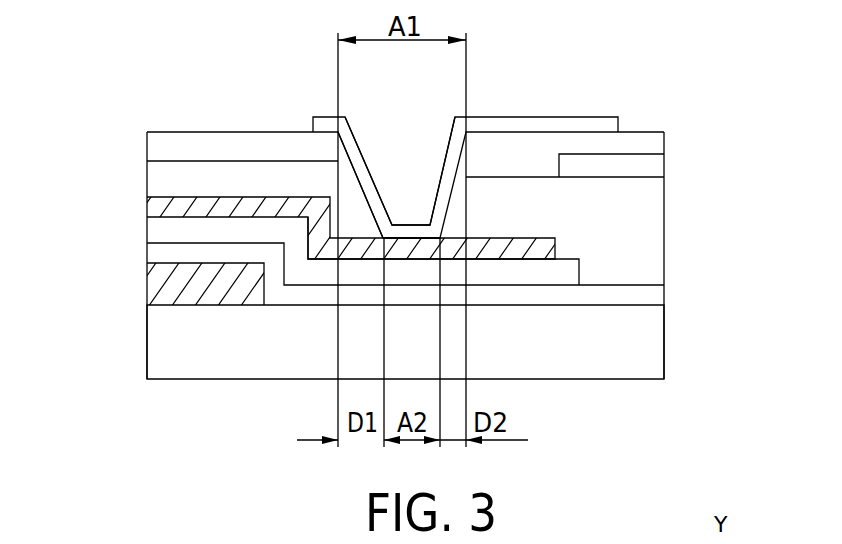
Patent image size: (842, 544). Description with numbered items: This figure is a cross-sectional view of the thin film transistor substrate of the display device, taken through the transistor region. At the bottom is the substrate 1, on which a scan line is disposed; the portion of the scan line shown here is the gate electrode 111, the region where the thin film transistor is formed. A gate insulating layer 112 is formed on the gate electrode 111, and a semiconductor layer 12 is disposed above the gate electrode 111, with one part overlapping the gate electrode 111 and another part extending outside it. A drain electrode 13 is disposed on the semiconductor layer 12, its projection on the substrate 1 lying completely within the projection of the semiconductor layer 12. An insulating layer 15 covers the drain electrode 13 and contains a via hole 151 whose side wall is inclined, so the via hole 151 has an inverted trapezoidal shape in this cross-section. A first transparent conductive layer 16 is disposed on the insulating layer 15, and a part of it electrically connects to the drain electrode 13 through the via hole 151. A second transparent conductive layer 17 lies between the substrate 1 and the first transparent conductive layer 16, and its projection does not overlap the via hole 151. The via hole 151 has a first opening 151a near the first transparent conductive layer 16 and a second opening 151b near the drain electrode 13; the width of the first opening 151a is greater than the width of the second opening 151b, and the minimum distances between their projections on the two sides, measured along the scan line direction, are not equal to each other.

The substrate 1 is at (642, 349).
The gate electrode 111 is at (150, 287).
The gate insulating layer 112 is at (148, 255).
The semiconductor layer 12 is at (150, 232).
The drain electrode 13 is at (150, 200).
The insulating layer 15 is at (150, 187).
The first transparent conductive layer 16 is at (612, 123).
The second transparent conductive layer 17 is at (648, 166).
The via hole 151 is at (407, 190).
The first opening 151a is at (332, 133).
The second opening 151b is at (415, 240).